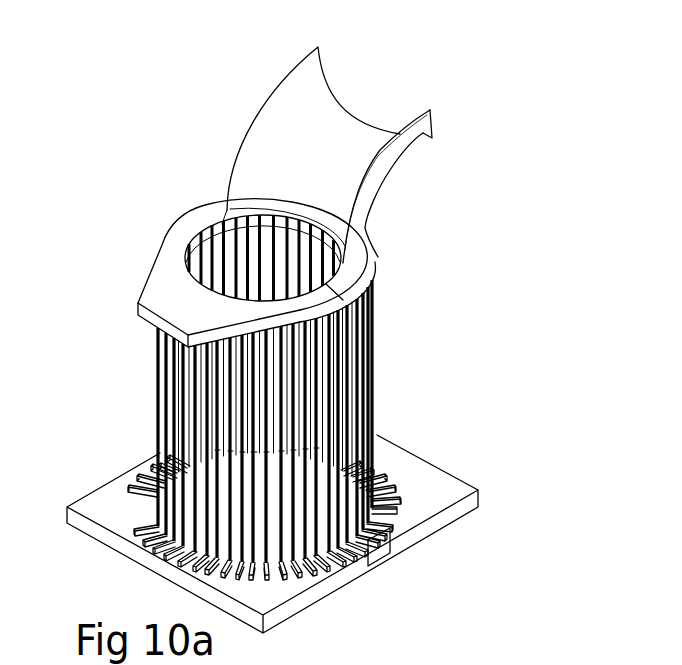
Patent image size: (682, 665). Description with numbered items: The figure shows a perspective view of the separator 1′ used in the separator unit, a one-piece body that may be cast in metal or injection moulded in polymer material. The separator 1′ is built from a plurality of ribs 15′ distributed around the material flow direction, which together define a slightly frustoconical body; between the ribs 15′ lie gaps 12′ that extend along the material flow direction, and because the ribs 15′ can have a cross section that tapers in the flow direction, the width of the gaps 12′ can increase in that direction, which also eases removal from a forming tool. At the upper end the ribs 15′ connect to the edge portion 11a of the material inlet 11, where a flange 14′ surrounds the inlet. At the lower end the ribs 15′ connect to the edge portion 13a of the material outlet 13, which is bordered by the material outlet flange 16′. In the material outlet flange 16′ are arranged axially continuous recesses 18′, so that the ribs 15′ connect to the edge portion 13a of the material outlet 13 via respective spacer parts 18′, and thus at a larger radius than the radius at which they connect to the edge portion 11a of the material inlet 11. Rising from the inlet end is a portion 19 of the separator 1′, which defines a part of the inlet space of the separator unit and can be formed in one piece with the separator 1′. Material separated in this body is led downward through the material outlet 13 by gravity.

The separator 1′ is at (80, 248).
The material inlet 11 is at (388, 82).
The edge portion of the material inlet 11a is at (202, 217).
The gaps 12′ is at (287, 425).
The material outlet 13 is at (365, 592).
The edge portion of the material outlet 13a is at (380, 543).
The flange 14′ is at (308, 244).
The ribs 15′ is at (323, 368).
The material outlet flange 16′ is at (420, 537).
The recesses / spacer parts 18′ is at (286, 568).
The portion defining part of the inlet space 19 is at (432, 112).